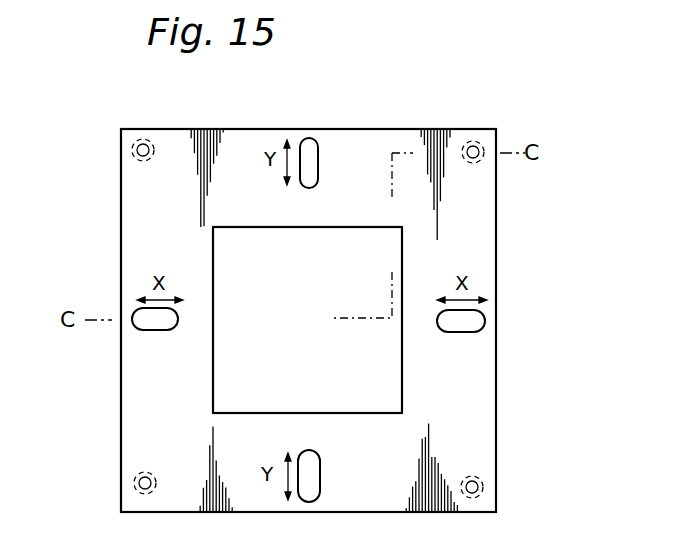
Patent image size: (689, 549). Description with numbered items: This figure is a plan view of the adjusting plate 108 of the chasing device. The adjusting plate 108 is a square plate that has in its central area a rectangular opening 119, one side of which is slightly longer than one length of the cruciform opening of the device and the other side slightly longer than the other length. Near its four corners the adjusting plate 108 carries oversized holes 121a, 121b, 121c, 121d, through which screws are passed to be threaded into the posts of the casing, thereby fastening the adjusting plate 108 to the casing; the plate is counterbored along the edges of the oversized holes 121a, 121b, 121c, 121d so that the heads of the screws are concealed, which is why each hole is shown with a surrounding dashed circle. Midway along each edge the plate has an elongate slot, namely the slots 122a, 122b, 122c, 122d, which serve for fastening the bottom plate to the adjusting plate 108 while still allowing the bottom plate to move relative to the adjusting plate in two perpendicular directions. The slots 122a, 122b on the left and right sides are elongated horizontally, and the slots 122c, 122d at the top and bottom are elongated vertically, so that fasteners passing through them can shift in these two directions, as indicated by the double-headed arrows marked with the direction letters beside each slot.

The adjusting plate 108 is at (396, 129).
The rectangular opening 119 is at (353, 245).
The oversized hole 121a is at (132, 151).
The oversized hole 121b is at (134, 483).
The oversized hole 121c is at (477, 159).
The oversized hole 121d is at (482, 483).
The elongate slot 122a is at (158, 322).
The elongate slot 122b is at (460, 322).
The elongate slot 122c is at (312, 143).
The elongate slot 122d is at (313, 477).